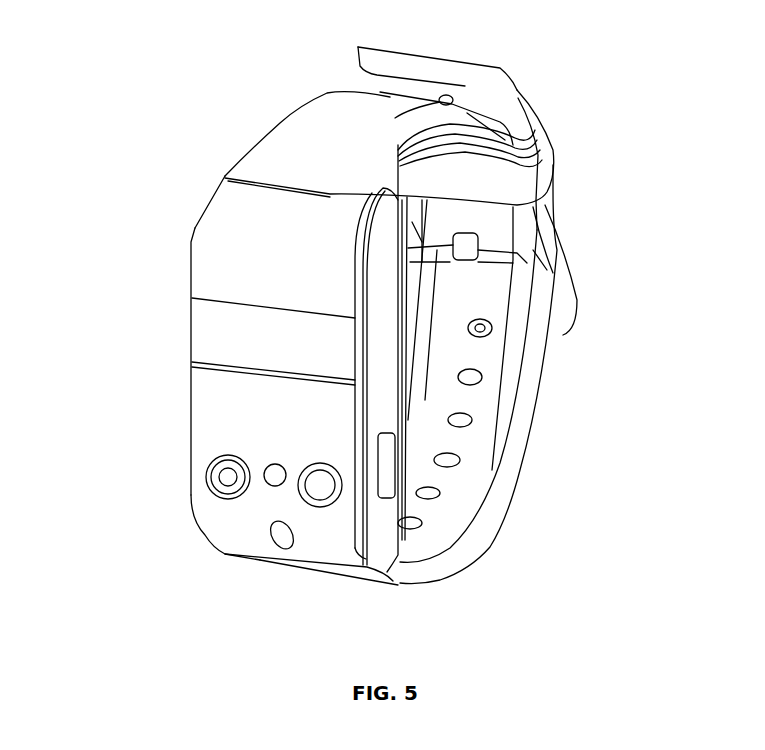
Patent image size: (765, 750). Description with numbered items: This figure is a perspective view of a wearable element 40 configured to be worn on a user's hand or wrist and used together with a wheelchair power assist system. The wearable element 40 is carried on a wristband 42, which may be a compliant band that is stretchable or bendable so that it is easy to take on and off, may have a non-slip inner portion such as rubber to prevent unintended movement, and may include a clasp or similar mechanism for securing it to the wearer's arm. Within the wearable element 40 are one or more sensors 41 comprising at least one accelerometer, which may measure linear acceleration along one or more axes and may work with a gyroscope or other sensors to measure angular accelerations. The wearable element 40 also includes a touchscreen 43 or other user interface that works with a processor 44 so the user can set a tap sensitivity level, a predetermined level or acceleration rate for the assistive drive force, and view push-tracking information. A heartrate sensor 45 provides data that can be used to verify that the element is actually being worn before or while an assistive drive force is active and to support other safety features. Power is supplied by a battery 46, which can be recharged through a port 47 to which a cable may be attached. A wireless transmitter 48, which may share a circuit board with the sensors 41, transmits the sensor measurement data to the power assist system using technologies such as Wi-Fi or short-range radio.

The wearable element 40 is at (146, 168).
The sensors 41 is at (202, 259).
The wristband 42 is at (483, 462).
The touchscreen 43 is at (232, 340).
The processor 44 is at (380, 292).
The heartrate sensor 45 is at (192, 468).
The battery 46 is at (380, 360).
The port 47 is at (387, 468).
The wireless transmitter 48 is at (213, 528).